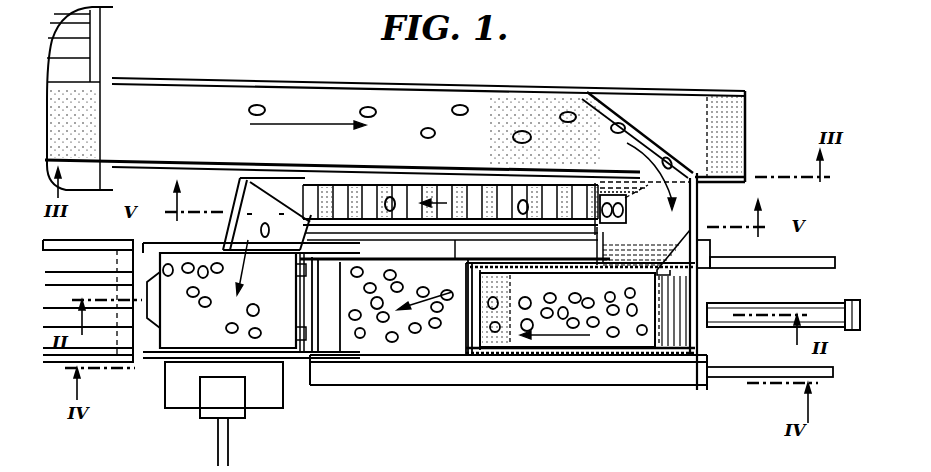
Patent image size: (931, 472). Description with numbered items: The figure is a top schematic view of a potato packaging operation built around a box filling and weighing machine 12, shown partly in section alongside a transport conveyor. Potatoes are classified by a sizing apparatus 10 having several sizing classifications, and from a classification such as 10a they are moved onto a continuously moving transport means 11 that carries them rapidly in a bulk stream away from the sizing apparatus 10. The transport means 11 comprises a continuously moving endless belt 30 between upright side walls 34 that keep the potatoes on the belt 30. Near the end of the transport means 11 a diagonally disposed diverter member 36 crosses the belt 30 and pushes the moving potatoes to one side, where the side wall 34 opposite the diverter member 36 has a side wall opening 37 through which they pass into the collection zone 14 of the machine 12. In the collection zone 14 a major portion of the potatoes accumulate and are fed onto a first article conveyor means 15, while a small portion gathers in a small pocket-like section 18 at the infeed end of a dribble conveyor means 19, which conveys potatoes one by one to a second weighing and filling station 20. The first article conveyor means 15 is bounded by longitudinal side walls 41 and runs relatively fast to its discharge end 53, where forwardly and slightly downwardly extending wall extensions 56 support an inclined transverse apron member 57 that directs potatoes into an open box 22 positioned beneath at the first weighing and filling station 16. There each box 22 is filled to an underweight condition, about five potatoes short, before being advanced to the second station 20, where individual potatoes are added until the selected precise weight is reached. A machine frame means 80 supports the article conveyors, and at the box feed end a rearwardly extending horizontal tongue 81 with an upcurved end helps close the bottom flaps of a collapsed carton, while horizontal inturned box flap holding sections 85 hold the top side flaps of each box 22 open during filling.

The sizing apparatus 10 is at (121, 29).
The sizing classification 10a is at (113, 69).
The transport means 11 is at (274, 81).
The endless belt 30 is at (227, 99).
The side walls 34 is at (499, 97).
The diverter member 36 is at (642, 127).
The side wall opening 37 is at (619, 158).
The dribble conveyor means 19 is at (375, 205).
The pocket-like section 18 is at (626, 192).
The collection zone 14 is at (667, 232).
The wall extensions 56 is at (477, 262).
The box 22 is at (364, 403).
The second weighing and filling station 20 is at (189, 329).
The box filling and weighing machine 12 is at (308, 398).
The first weighing and filling station 16 is at (427, 361).
The apron member 57 is at (468, 327).
The discharge end 53 is at (508, 360).
The longitudinal side walls 41 is at (539, 358).
The first article conveyor means 15 is at (576, 362).
The box flap holding sections 85 is at (650, 380).
The machine frame means 80 is at (698, 399).
The tongue 81 is at (846, 305).